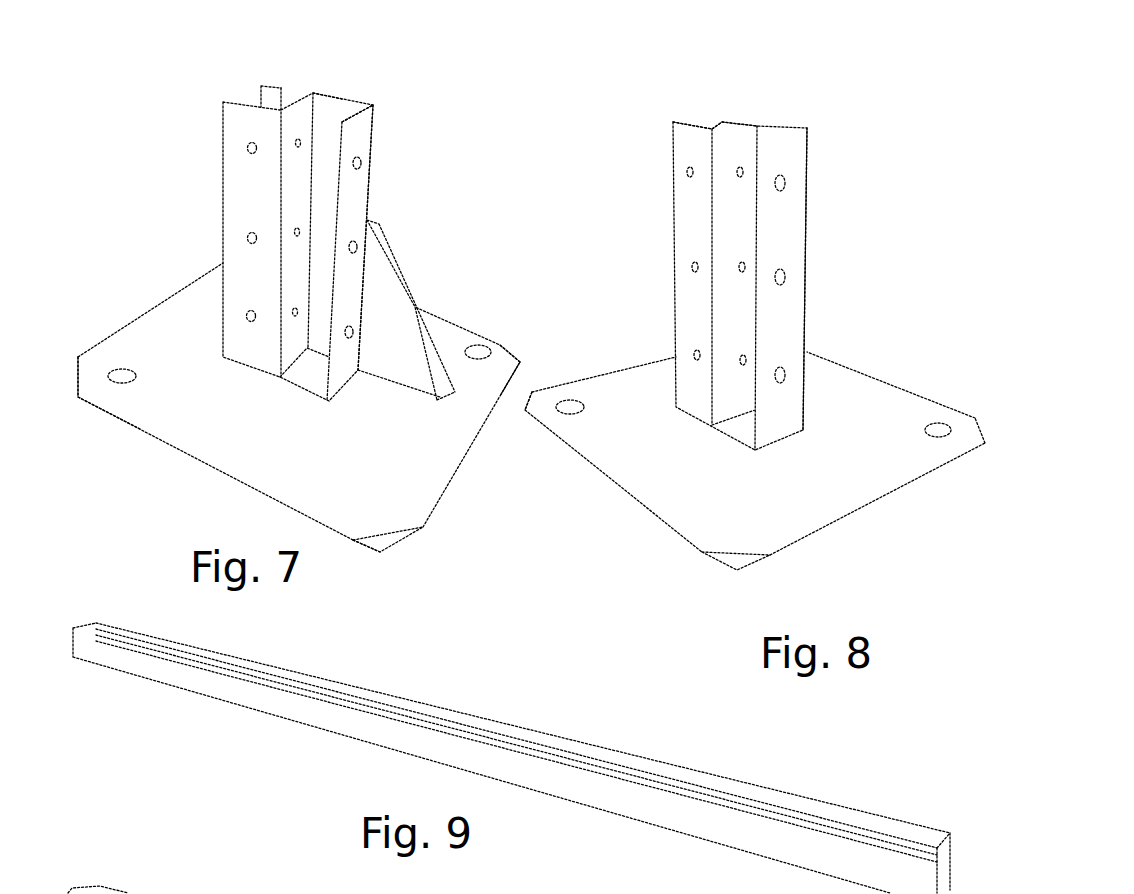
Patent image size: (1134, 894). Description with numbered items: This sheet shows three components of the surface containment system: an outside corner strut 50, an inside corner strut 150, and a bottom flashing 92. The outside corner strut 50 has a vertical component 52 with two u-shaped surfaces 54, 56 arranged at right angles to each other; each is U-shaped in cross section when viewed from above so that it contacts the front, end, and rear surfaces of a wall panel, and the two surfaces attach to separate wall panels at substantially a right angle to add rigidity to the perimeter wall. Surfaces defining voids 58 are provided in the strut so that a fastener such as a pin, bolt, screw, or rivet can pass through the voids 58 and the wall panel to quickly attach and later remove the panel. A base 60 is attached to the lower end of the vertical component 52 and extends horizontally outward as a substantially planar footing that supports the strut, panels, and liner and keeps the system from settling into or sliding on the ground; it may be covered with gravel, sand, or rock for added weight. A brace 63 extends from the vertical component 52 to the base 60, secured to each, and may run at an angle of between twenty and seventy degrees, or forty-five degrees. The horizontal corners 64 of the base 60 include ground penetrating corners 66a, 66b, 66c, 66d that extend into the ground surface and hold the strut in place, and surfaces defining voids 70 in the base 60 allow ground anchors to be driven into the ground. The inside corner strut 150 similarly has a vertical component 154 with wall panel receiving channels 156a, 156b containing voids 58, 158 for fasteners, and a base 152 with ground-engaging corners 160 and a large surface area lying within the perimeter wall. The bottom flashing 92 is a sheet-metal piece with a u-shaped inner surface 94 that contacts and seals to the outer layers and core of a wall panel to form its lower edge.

In FIG. 7, the outside corner strut 50 is at (223, 222).
In FIG. 7, the vertical component 52 is at (367, 158).
In FIG. 7, the u-shaped surface 54 is at (327, 115).
In FIG. 7, the u-shaped surface 56 is at (287, 108).
In FIG. 7, the voids 58 is at (252, 147).
In FIG. 8, the voids 58 is at (783, 182).
In FIG. 7, the base 60 is at (505, 355).
In FIG. 7, the brace 63 is at (410, 288).
In FIG. 7, the horizontal corners 64 is at (388, 527).
In FIG. 7, the ground penetrating corner 66a is at (388, 545).
In FIG. 7, the ground penetrating corner 66b is at (78, 373).
In FIG. 7, the ground penetrating corner 66c is at (206, 153).
In FIG. 7, the ground penetrating corner 66d is at (522, 363).
In FIG. 7, the voids 70 is at (478, 347).
In FIG. 8, the voids 70 is at (575, 412).
In FIG. 8, the inside corner strut 150 is at (807, 320).
In FIG. 8, the base 152 is at (915, 417).
In FIG. 8, the vertical component 154 is at (806, 252).
In FIG. 8, the wall panel receiving channel 156a is at (743, 138).
In FIG. 8, the wall panel receiving channel 156b is at (680, 138).
In FIG. 8, the voids 158 is at (692, 177).
In FIG. 8, the ground-engaging corners 160 is at (524, 416).
In FIG. 9, the bottom flashing 92 is at (737, 780).
In FIG. 9, the u-shaped inner surface 94 is at (937, 845).